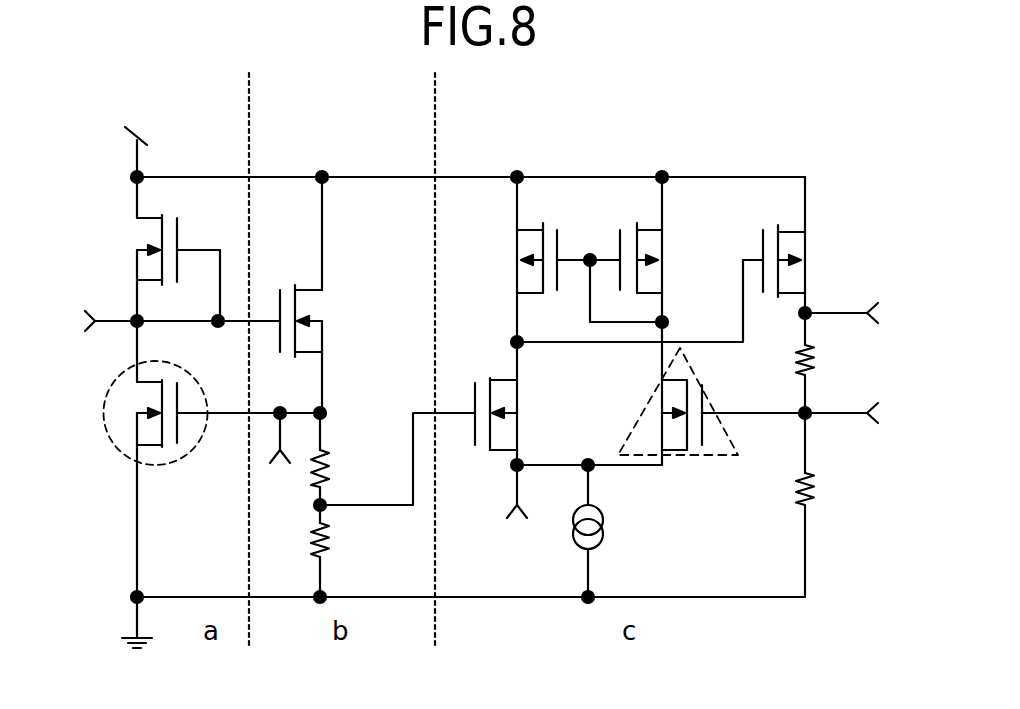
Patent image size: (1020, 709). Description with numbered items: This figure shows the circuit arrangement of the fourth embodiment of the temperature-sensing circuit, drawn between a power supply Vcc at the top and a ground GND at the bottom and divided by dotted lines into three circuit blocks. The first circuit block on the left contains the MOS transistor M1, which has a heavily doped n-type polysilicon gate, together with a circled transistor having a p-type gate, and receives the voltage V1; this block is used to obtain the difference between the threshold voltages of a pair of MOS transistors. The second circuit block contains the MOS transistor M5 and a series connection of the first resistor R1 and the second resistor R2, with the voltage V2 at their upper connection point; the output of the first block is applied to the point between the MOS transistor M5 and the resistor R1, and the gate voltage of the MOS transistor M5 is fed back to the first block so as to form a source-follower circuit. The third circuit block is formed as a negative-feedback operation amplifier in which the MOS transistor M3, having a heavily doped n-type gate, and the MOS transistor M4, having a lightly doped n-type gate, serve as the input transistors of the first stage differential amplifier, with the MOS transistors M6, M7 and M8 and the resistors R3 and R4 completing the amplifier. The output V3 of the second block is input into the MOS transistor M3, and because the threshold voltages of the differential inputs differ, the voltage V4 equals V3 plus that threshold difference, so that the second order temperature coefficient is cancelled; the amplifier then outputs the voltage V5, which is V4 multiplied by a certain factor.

The MOS transistor M1 is at (145, 237).
The MOS transistor M3 is at (517, 405).
The MOS transistor M4 is at (655, 395).
The MOS transistor M5 is at (315, 305).
The MOS transistor M6 is at (520, 275).
The MOS transistor M7 is at (648, 278).
The MOS transistor M8 is at (800, 275).
The first resistor R1 is at (338, 468).
The second resistor R2 is at (338, 543).
The resistor R3 is at (822, 357).
The resistor R4 is at (822, 487).
The voltage V1 is at (159, 325).
The voltage V2 is at (277, 459).
The output voltage of the second circuit block V3 is at (514, 509).
The voltage of the third circuit block V4 is at (864, 416).
The output voltage V5 is at (864, 316).
The power supply Vcc is at (135, 137).
The ground GND is at (135, 642).